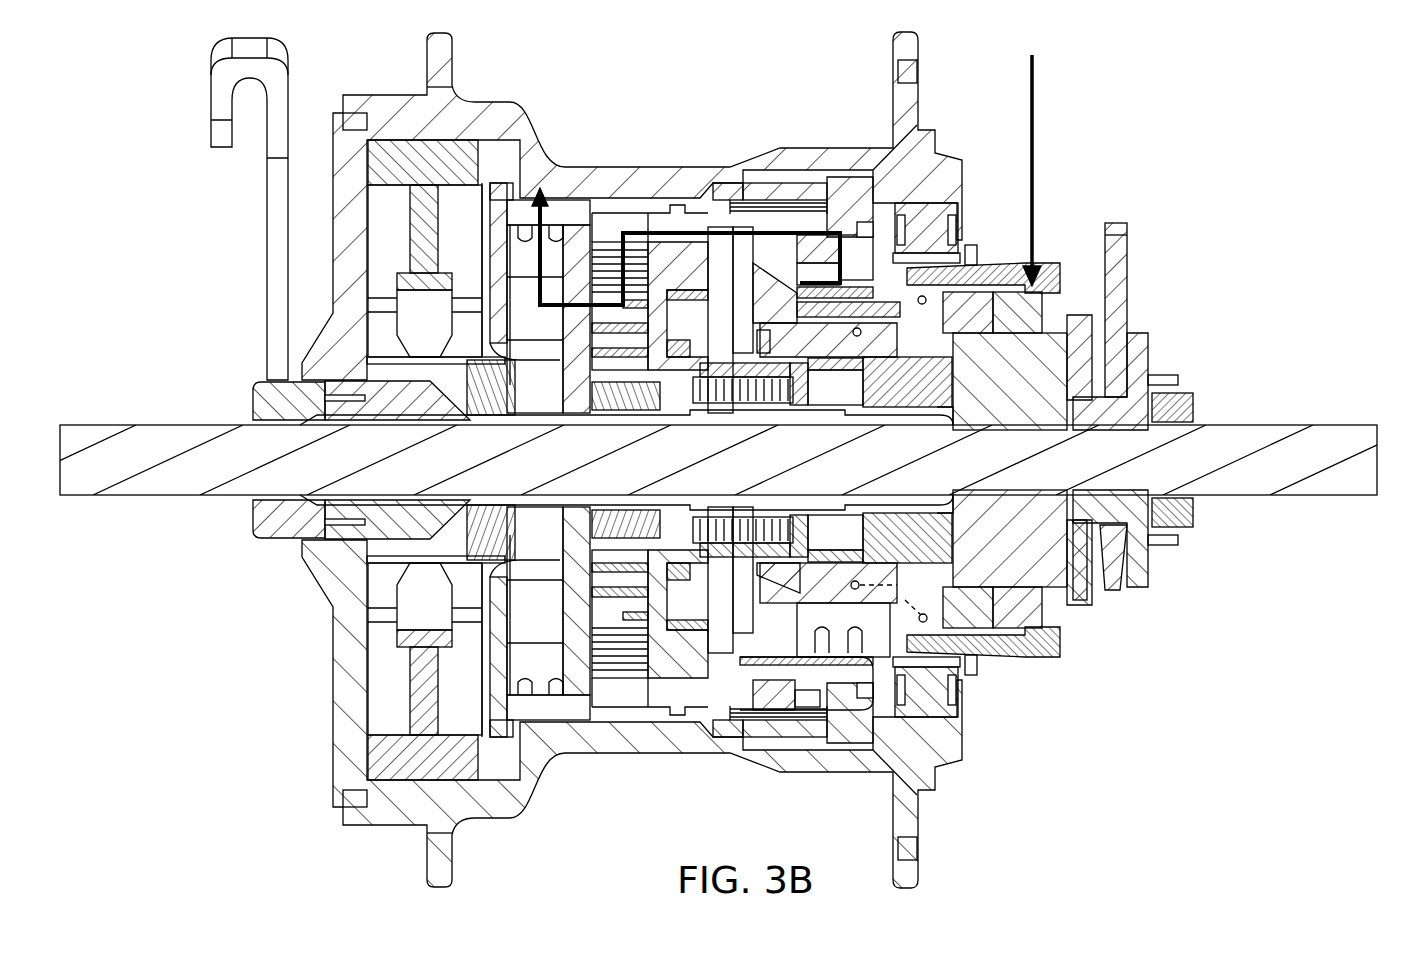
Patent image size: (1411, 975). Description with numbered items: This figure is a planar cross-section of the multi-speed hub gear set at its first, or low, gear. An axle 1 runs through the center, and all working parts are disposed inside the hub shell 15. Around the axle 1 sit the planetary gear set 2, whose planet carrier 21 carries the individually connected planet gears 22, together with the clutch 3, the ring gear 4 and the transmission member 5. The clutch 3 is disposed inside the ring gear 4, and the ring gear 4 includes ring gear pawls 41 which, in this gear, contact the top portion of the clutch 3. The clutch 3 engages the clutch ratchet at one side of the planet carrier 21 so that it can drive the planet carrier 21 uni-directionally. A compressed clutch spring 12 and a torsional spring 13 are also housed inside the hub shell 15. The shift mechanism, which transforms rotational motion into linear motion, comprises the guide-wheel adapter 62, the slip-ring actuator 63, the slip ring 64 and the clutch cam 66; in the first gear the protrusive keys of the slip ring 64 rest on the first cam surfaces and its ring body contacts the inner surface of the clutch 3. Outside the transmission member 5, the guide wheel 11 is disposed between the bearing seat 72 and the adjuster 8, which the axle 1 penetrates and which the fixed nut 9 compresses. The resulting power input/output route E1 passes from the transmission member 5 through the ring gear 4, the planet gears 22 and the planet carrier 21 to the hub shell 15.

The axle 1 is at (1321, 448).
The planetary gear set 2 is at (515, 39).
The clutch 3 is at (740, 300).
The ring gear 4 is at (836, 230).
The transmission member 5 is at (996, 268).
The adjuster 8 is at (1140, 395).
The fixed nut 9 is at (1188, 408).
The guide wheel 11 is at (1118, 258).
The compressed clutch spring 12 is at (920, 255).
The torsional spring 13 is at (684, 610).
The hub shell 15 is at (636, 175).
The planet carrier 21 is at (572, 262).
The planet gears 22 is at (606, 215).
The ring gear pawls 41 is at (786, 220).
The guide-wheel adapter 62 is at (932, 548).
The slip-ring actuator 63 is at (775, 660).
The slip ring 64 is at (757, 687).
The clutch cam 66 is at (640, 590).
The bearing seat 72 is at (1047, 375).
The power input/output route E1 is at (1040, 152).